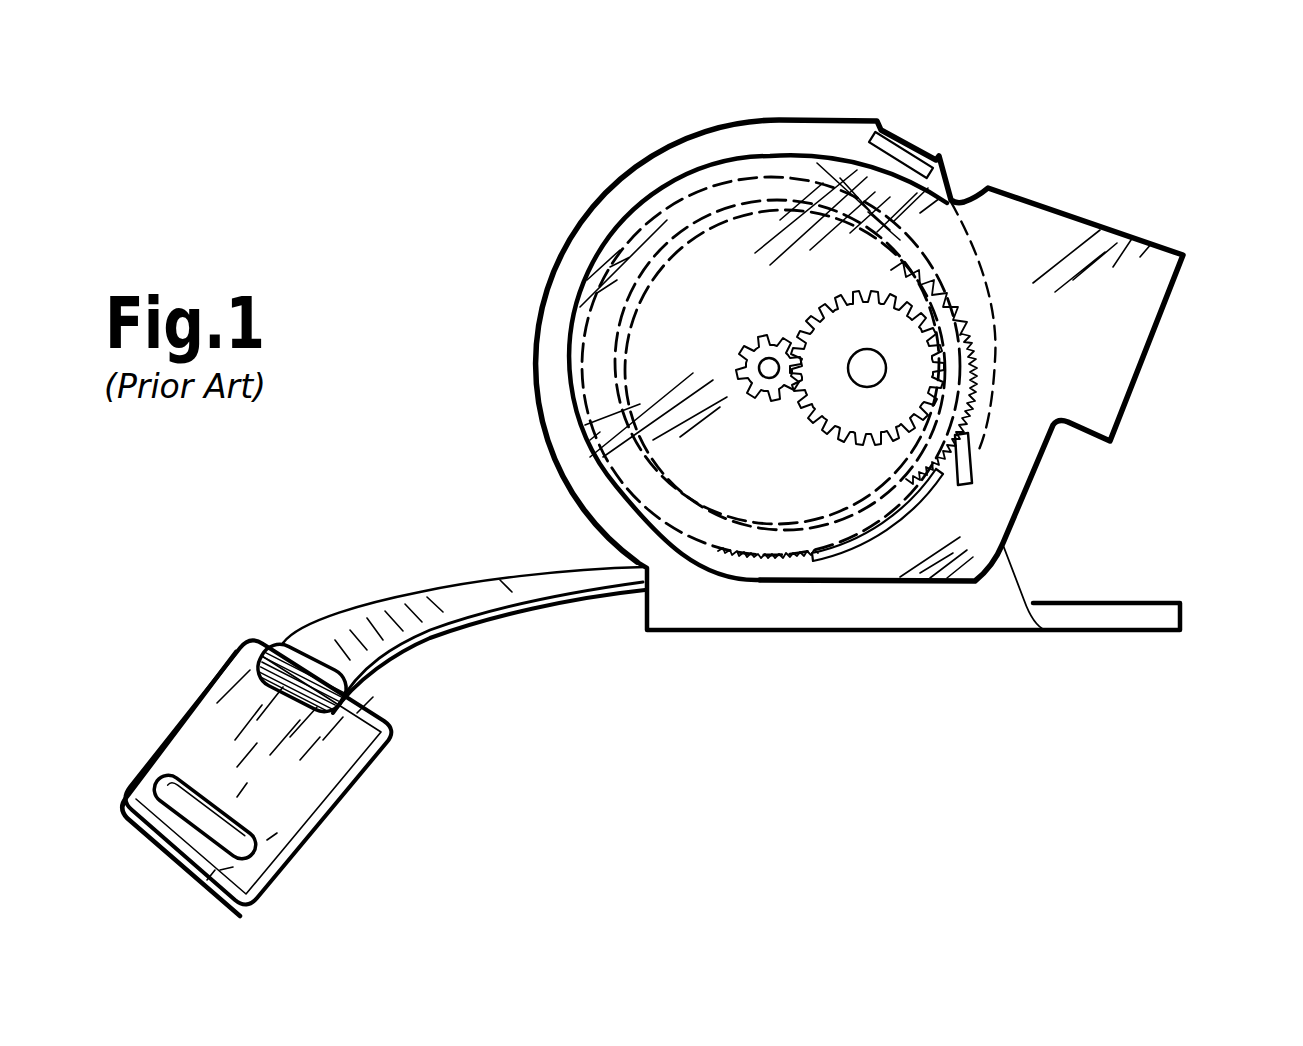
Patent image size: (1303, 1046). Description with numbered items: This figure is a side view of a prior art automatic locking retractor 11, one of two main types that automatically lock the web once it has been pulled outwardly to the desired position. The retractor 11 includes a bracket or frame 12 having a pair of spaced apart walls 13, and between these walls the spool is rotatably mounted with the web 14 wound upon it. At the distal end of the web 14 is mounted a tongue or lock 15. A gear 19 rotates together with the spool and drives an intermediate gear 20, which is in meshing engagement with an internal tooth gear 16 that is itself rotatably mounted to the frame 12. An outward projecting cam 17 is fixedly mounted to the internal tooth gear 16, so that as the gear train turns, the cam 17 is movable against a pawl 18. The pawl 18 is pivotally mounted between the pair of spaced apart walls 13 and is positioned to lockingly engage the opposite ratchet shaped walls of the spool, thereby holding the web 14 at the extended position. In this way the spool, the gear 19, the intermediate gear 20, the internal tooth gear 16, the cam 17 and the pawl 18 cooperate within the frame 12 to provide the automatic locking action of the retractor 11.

The retractor 11 is at (1128, 199).
The bracket or frame 12 is at (1000, 604).
The spaced apart walls 13 is at (547, 325).
The web 14 is at (398, 602).
The tongue or lock 15 is at (323, 773).
The internal tooth gear 16 is at (748, 190).
The cam 17 is at (853, 550).
The pawl 18 is at (973, 453).
The gear 19 is at (750, 353).
The intermediate gear 20 is at (820, 428).